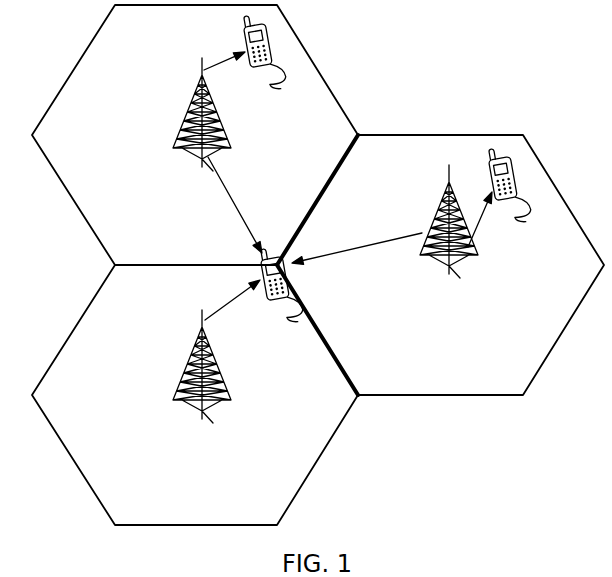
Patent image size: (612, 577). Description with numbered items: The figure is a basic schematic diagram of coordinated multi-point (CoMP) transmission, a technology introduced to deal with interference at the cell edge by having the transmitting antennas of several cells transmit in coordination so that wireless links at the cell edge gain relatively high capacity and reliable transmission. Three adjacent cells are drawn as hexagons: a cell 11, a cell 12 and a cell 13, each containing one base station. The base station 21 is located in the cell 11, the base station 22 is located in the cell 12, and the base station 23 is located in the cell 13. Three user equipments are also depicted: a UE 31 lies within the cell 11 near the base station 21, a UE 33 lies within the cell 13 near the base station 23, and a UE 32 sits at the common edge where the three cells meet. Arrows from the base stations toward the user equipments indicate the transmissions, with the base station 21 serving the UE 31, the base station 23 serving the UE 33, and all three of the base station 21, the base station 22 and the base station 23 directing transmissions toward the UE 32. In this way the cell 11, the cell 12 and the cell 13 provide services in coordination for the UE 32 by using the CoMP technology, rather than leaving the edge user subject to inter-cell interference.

The cell 11 is at (195, 135).
The cell 12 is at (195, 395).
The cell 13 is at (440, 265).
The base station 21 is at (197, 98).
The base station 22 is at (197, 345).
The base station 23 is at (444, 208).
The user equipment 31 is at (272, 65).
The user equipment 32 is at (277, 295).
The user equipment 33 is at (515, 196).